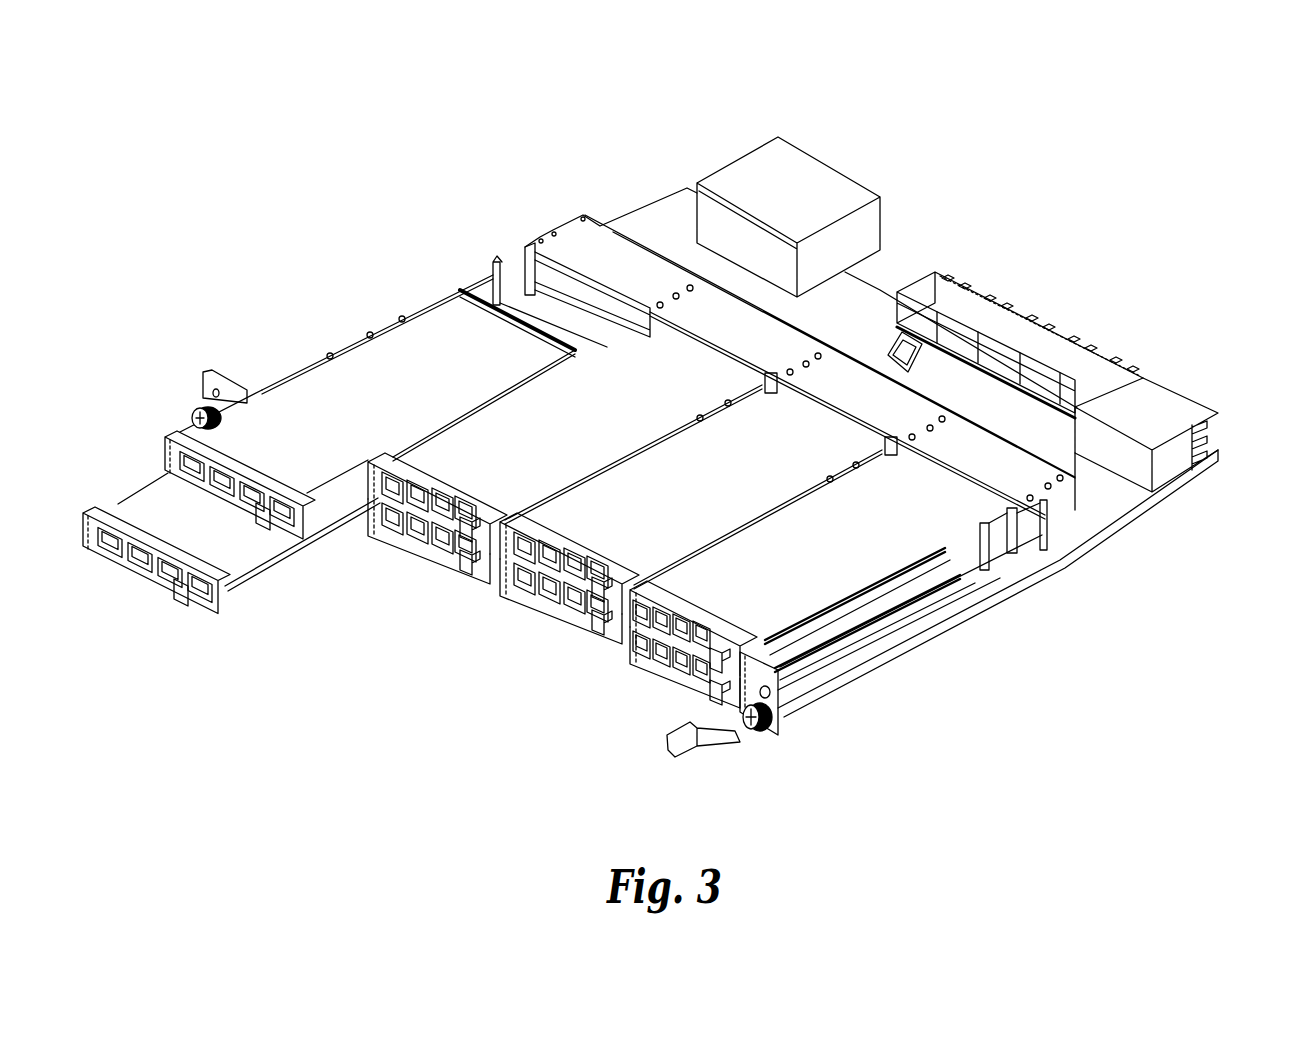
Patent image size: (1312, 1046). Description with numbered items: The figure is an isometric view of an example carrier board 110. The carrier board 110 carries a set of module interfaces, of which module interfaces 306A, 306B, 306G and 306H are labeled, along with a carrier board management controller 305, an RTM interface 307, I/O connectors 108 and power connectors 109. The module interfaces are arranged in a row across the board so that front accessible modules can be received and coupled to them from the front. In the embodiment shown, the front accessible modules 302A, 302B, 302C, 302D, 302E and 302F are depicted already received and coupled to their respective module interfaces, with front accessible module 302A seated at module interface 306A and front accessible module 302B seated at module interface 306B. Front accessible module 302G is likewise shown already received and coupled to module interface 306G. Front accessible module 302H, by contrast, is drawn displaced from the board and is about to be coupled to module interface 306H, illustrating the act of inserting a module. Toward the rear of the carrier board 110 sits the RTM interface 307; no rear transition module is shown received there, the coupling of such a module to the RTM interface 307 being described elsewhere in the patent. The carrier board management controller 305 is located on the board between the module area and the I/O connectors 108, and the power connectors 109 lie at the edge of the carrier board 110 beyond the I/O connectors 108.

The carrier board 110 is at (644, 214).
The RTM interface 307 is at (813, 153).
The carrier board management controller 305 is at (912, 337).
The I/O connectors 108 is at (1145, 358).
The power connectors 109 is at (1213, 455).
The module interface 306A is at (1080, 512).
The module interface 306B is at (1077, 477).
The module interface 306G is at (560, 240).
The module interface 306H is at (600, 240).
The front accessible module 302A is at (680, 684).
The front accessible module 302B is at (603, 638).
The front accessible module 302C is at (560, 625).
The front accessible module 302D is at (523, 543).
The front accessible module 302E is at (425, 553).
The front accessible module 302F is at (393, 483).
The front accessible module 302G is at (187, 602).
The front accessible module 302H is at (158, 457).